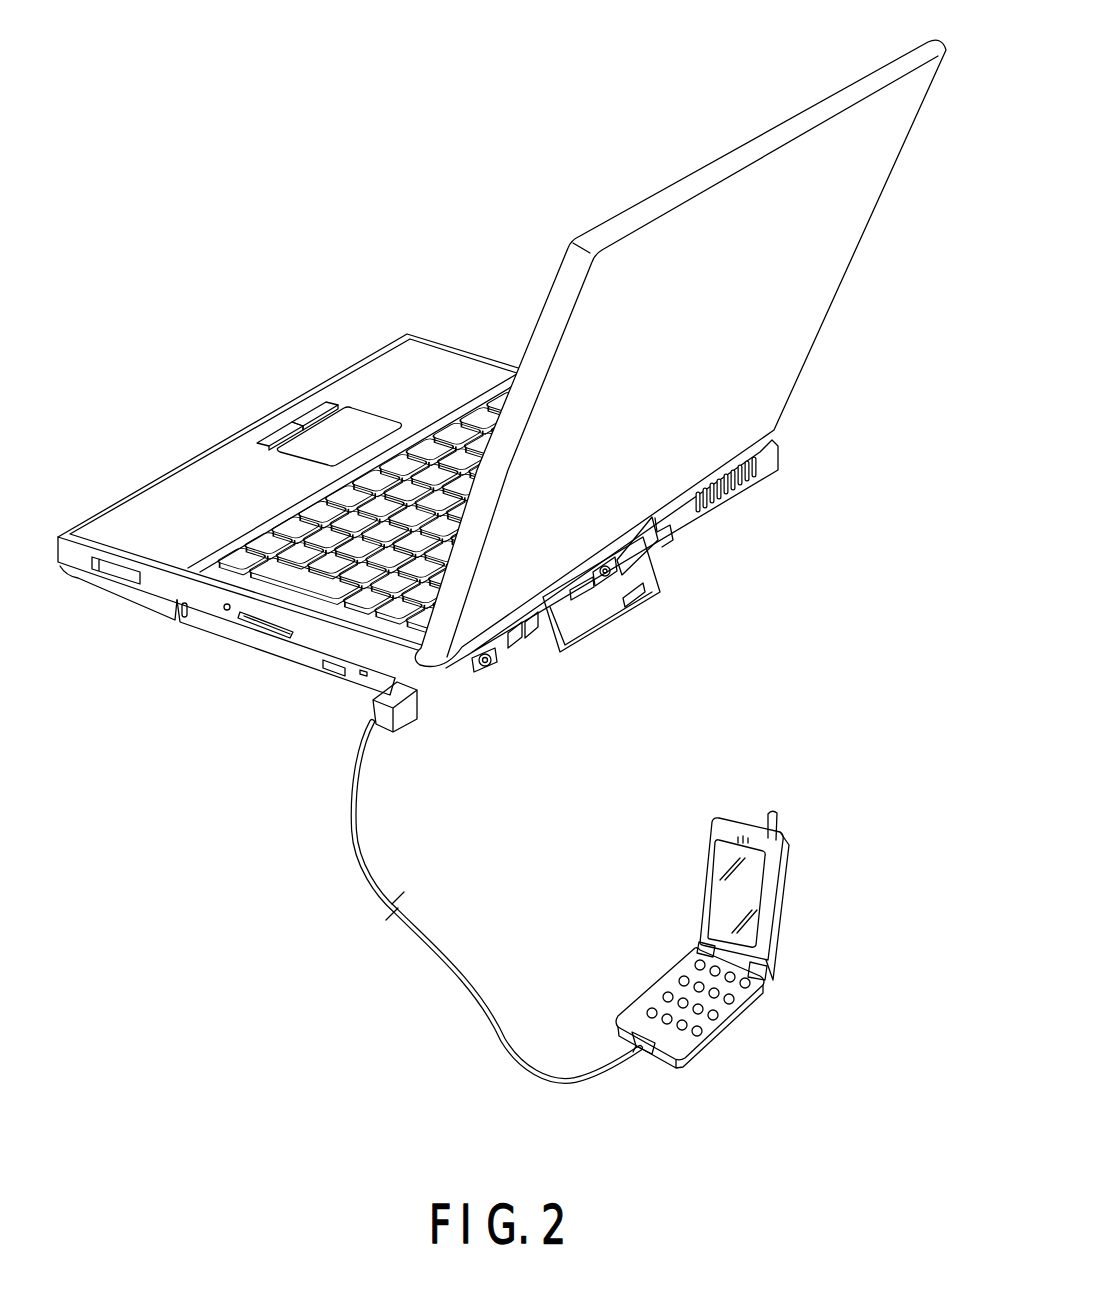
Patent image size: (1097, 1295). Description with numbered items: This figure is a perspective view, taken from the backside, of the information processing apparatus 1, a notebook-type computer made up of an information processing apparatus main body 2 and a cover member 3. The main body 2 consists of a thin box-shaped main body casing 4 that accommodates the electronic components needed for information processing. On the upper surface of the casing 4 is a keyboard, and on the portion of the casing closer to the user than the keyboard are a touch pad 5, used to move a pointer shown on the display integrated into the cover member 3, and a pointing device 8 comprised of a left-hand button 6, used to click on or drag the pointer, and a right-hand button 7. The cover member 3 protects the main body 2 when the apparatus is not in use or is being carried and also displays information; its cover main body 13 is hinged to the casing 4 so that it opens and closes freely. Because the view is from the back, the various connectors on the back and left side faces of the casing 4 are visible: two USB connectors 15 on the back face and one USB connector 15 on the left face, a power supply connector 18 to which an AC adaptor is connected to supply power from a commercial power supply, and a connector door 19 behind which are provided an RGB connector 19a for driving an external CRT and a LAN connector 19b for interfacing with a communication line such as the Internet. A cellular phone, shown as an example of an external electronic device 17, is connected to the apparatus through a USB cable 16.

The information processing apparatus 1 is at (471, 112).
The information processing apparatus main body 2 is at (135, 490).
The cover member 3 is at (795, 116).
The main body casing 4 is at (456, 338).
The touch pad 5 is at (357, 430).
The left-hand button 6 is at (313, 413).
The right-hand button 7 is at (283, 431).
The pointing device 8 is at (345, 312).
The cover main body 13 is at (876, 216).
The USB connector 15 is at (550, 655).
The USB cable 16 is at (463, 958).
The electronic device 17 is at (786, 890).
The power supply connector 18 is at (495, 670).
The connector door 19 is at (686, 560).
The RGB connector 19a is at (568, 608).
The LAN connector 19b is at (640, 547).